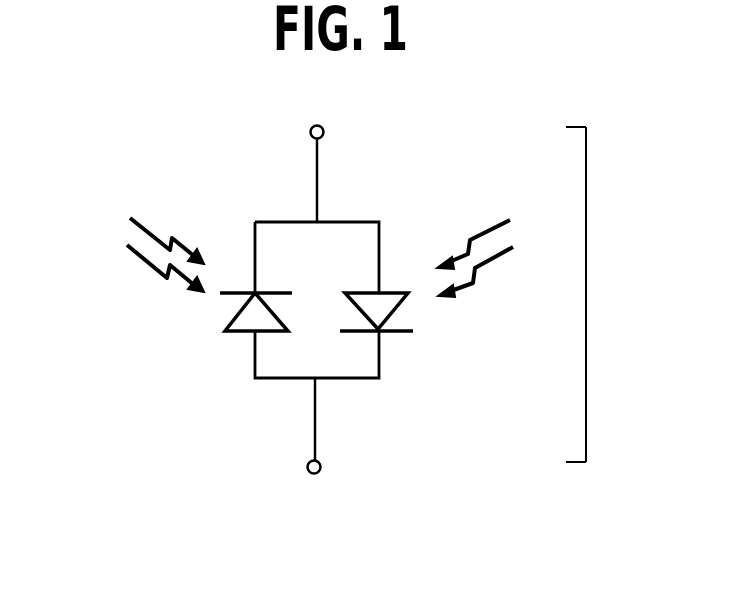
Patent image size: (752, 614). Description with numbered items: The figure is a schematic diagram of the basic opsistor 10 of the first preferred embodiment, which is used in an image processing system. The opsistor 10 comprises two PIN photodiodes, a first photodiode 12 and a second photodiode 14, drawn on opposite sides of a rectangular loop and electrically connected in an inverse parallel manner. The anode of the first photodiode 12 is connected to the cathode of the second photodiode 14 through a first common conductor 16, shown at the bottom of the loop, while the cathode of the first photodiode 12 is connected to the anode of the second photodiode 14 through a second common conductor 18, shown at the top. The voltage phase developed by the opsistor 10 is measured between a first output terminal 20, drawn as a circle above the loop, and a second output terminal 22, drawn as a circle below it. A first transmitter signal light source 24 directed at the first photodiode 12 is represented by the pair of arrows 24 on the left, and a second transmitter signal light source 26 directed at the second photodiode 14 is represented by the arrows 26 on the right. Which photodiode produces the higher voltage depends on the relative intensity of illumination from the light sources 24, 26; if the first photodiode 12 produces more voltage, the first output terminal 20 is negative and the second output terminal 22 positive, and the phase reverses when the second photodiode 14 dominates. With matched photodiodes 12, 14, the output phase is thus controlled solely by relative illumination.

The opsistor 10 is at (587, 316).
The first photodiode 12 is at (240, 334).
The second photodiode 14 is at (393, 332).
The first common conductor 16 is at (293, 380).
The second common conductor 18 is at (295, 222).
The first output terminal 20 is at (324, 131).
The second output terminal 22 is at (313, 475).
The first transmitter signal light source 24 is at (130, 229).
The second transmitter signal light source 26 is at (513, 226).